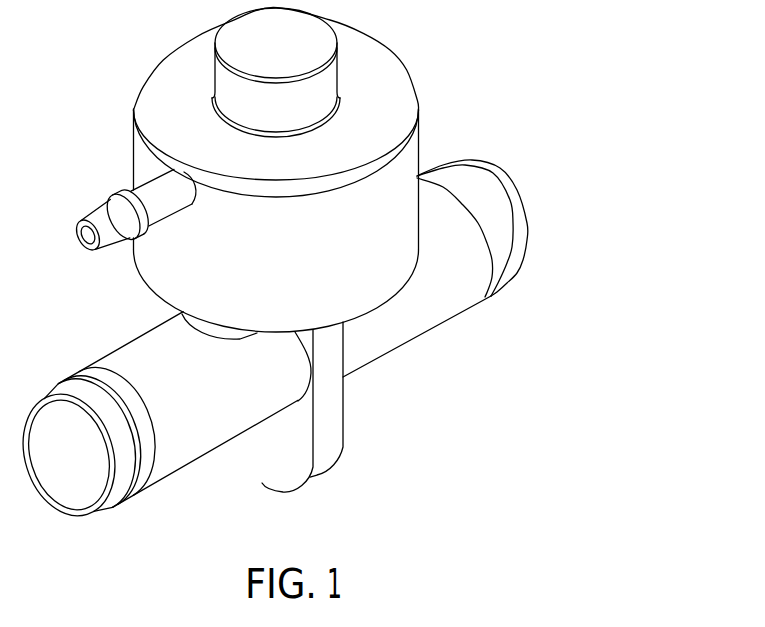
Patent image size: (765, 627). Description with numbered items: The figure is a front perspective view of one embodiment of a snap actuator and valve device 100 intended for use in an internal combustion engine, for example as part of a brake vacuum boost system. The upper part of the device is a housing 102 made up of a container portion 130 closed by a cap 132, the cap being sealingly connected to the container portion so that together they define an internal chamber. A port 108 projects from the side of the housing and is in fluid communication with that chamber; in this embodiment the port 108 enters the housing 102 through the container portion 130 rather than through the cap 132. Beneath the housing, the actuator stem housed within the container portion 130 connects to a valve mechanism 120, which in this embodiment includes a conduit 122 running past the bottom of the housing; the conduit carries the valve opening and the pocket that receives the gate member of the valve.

The device 100 is at (558, 138).
The housing 102 is at (443, 77).
The port 108 is at (95, 210).
The valve mechanism 120 is at (258, 443).
The conduit 122 is at (430, 320).
The container portion 130 is at (150, 285).
The cap 132 is at (200, 96).